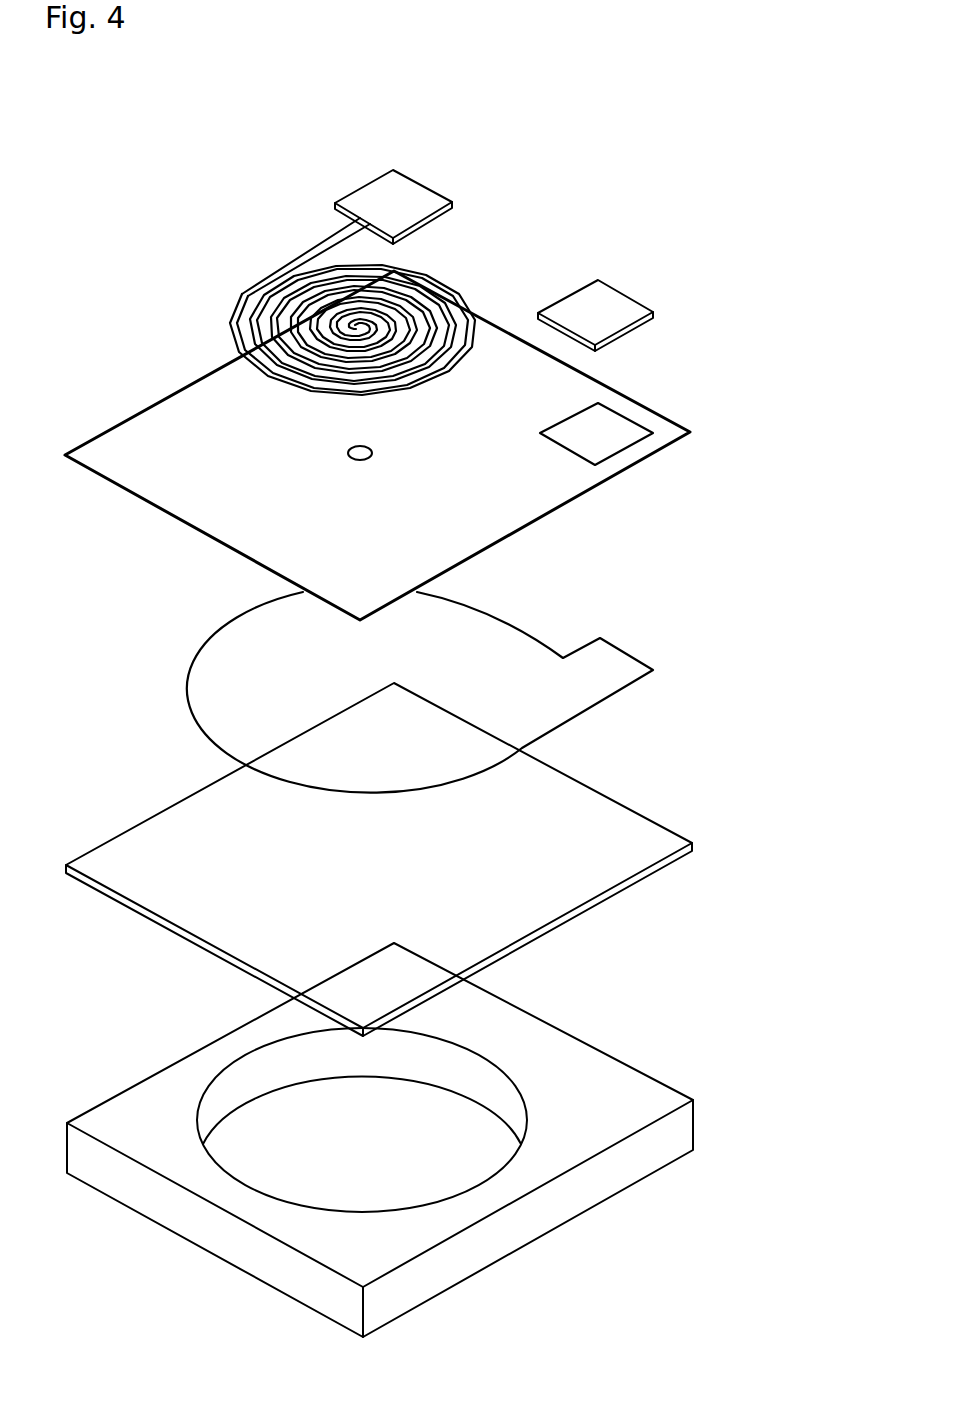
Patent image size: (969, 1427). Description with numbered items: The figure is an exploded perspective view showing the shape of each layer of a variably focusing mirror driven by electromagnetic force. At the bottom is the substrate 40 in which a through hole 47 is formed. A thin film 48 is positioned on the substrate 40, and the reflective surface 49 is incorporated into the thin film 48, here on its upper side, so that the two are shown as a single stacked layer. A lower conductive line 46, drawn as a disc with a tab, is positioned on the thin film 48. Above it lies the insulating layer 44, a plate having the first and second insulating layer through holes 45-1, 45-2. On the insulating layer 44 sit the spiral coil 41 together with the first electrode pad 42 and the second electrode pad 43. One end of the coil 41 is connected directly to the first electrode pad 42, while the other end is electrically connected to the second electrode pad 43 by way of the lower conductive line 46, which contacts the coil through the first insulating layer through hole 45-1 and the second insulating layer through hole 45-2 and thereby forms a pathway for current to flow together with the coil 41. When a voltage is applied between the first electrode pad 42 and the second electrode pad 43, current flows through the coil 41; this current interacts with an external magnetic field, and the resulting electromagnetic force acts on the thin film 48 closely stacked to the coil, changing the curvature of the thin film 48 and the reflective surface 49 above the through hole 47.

The substrate 40 is at (620, 1095).
The coil 41 is at (226, 333).
The first electrode pad 42 is at (388, 192).
The second electrode pad 43 is at (610, 315).
The insulating layer 44 is at (168, 465).
The first insulating layer through hole 45-1 is at (352, 457).
The second insulating layer through hole 45-2 is at (636, 432).
The lower conductive line 46 is at (600, 660).
The through hole 47 is at (282, 1162).
The thin film 48 is at (419, 859).
The reflective surface 49 is at (620, 842).